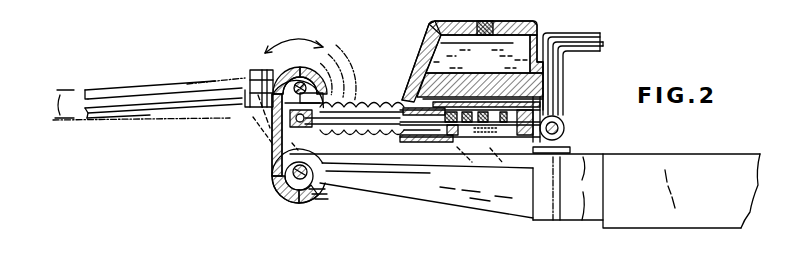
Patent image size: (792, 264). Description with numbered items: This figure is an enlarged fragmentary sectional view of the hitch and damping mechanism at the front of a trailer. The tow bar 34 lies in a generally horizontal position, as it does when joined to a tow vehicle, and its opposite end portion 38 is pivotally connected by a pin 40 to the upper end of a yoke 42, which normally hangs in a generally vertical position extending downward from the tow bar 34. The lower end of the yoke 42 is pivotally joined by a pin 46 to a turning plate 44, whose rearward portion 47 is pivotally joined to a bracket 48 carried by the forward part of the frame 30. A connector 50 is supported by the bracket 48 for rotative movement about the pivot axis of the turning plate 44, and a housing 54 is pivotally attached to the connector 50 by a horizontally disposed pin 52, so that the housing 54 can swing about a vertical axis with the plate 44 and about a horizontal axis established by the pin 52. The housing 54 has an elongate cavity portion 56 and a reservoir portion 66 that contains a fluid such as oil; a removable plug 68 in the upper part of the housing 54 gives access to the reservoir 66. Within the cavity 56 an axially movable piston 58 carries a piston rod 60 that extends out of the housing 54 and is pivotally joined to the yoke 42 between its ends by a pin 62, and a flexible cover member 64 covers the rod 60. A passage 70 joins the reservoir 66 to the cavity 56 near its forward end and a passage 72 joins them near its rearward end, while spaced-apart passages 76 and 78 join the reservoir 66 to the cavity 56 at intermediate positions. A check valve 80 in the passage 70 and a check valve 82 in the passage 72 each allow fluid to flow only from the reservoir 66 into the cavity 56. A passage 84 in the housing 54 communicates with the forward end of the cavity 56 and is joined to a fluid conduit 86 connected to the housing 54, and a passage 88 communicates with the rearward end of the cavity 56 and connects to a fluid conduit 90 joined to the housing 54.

The frame 30 is at (679, 152).
The tow bar 34 is at (137, 84).
The opposite end portion 38 is at (274, 66).
The pin 40 is at (305, 78).
The yoke 42 is at (273, 154).
The turning plate 44 is at (394, 198).
The pin 46 is at (294, 176).
The rearward portion 47 is at (538, 206).
The bracket 48 is at (568, 188).
The connector 50 is at (574, 147).
The pin 52 is at (560, 131).
The housing 54 is at (422, 42).
The elongate cavity portion 56 is at (428, 140).
The piston 58 is at (478, 140).
The piston rod 60 is at (396, 138).
The pin 62 is at (274, 138).
The flexible cover member 64 is at (381, 90).
The reservoir portion 66 is at (447, 36).
The plug 68 is at (485, 25).
The passage 70 is at (401, 99).
The passage 72 is at (517, 30).
The passage 76 is at (452, 60).
The passage 78 is at (502, 60).
The check valve 80 is at (416, 66).
The check valve 82 is at (563, 100).
The passage 84 is at (523, 129).
The fluid conduit 86 is at (572, 32).
The passage 88 is at (566, 85).
The fluid conduit 90 is at (604, 46).